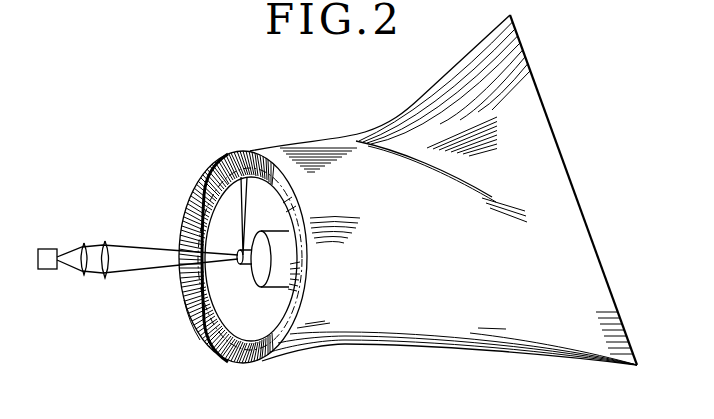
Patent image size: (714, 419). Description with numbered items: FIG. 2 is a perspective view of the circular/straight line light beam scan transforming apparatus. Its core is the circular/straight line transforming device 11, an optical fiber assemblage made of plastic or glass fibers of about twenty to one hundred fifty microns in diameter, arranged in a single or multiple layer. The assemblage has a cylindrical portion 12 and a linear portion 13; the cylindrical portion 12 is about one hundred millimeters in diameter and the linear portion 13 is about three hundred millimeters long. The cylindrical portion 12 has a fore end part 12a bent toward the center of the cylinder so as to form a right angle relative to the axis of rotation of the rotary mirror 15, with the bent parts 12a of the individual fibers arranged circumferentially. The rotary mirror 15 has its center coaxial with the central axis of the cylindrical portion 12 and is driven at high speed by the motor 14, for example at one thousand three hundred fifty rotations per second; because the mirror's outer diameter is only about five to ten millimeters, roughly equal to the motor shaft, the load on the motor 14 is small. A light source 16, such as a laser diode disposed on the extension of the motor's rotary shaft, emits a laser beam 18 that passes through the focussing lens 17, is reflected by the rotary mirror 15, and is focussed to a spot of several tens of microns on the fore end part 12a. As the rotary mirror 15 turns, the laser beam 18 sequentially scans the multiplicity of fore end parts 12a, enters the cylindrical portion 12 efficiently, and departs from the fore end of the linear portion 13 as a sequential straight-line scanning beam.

The circular/straight line transforming device 11 is at (442, 247).
The circular portion 12 is at (244, 150).
The fore end part 12a is at (198, 326).
The linear portion 13 is at (553, 145).
The motor 14 is at (277, 283).
The rotary mirror 15 is at (242, 265).
The light source 16 is at (45, 270).
The focussing lens 17 is at (106, 283).
The laser beam 18 is at (141, 251).